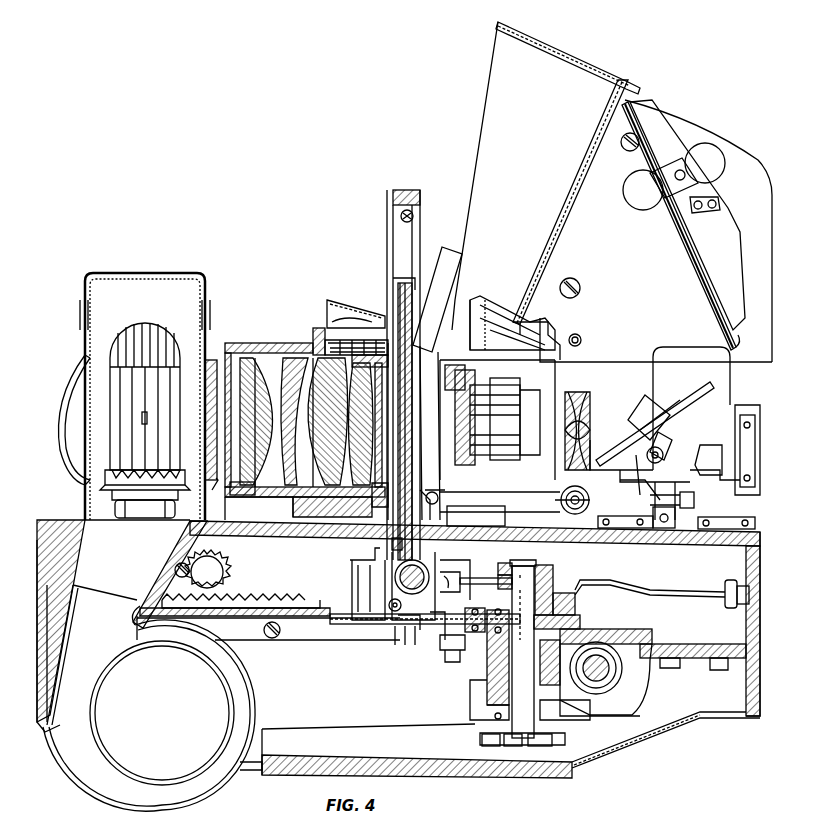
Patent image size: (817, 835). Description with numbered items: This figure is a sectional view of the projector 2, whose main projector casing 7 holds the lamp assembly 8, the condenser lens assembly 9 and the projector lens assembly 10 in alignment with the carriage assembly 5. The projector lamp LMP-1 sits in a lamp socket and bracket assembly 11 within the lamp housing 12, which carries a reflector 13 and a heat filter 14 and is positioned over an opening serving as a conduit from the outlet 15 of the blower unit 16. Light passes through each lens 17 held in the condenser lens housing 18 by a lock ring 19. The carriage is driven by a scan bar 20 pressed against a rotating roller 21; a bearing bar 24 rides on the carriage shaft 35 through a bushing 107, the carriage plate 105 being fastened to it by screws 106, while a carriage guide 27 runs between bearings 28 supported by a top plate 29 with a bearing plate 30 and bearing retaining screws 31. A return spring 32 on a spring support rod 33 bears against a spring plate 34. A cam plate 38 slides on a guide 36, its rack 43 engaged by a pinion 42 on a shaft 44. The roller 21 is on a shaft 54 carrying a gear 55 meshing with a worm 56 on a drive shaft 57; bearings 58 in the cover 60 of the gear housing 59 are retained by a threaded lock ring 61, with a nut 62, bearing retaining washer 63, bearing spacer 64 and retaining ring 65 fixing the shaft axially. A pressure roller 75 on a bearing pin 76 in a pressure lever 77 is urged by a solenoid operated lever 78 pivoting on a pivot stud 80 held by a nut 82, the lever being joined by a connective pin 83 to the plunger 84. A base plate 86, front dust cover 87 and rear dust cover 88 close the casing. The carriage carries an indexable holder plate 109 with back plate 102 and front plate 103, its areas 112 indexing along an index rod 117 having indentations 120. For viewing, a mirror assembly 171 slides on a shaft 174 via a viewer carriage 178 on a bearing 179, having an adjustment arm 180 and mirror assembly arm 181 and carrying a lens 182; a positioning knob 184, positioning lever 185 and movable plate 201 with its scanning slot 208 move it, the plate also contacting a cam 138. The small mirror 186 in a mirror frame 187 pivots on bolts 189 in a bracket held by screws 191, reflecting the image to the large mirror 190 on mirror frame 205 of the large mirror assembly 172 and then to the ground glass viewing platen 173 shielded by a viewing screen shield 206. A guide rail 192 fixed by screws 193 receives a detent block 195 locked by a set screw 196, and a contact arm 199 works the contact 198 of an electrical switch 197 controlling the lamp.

The projector 2 is at (34, 529).
The carriage assembly 5 is at (386, 290).
The main projector casing 7 is at (36, 571).
The lamp assembly 8 is at (77, 295).
The condenser lens assembly 9 is at (247, 513).
The projector lens assembly 10 is at (553, 376).
The lamp socket and bracket assembly 11 is at (176, 484).
The lamp housing 12 is at (140, 276).
The reflector 13 is at (64, 393).
The heat filter 14 is at (211, 358).
The outlet 15 is at (70, 600).
The blower unit 16 is at (240, 670).
The lens 17 is at (286, 370).
The condenser lens housing 18 is at (252, 345).
The lock ring 19 is at (227, 490).
The scan bar 20 is at (425, 607).
The roller 21 is at (575, 604).
The bearing bar 24 is at (447, 560).
The carriage guide 27 is at (361, 424).
The bearings 28 is at (299, 420).
The top plate 29 is at (311, 333).
The bearing plate 30 is at (308, 330).
The bearing retaining screws 31 is at (356, 315).
The return spring 32 is at (395, 636).
The spring support rod 33 is at (405, 640).
The spring plate 34 is at (416, 636).
The carriage shaft 35 is at (418, 560).
The guide 36 is at (298, 644).
The cam plate 38 is at (330, 610).
The pinion 42 is at (205, 560).
The rack 43 is at (216, 604).
The shaft 44 is at (190, 570).
The shaft 54 is at (536, 560).
The gear 55 is at (568, 722).
The worm 56 is at (606, 658).
The drive shaft 57 is at (568, 685).
The bearings 58 is at (578, 628).
The gear housing 59 is at (642, 685).
The cover 60 is at (612, 628).
The threaded lock ring 61 is at (492, 747).
The nut 62 is at (541, 747).
The bearing retaining washer 63 is at (515, 747).
The bearing spacer 64 is at (535, 630).
The retaining ring 65 is at (524, 610).
The pressure roller 75 is at (409, 607).
The bearing pin 76 is at (500, 562).
The pressure lever 77 is at (498, 574).
The solenoid operated lever 78 is at (604, 584).
The pivot stud 80 is at (477, 624).
The nut 82 is at (436, 665).
The connective pin 83 is at (724, 590).
The plunger 84 is at (726, 602).
The base plate 86 is at (512, 776).
The front dust cover 87 is at (664, 728).
The rear dust cover 88 is at (245, 778).
The back plate 102 is at (470, 412).
The front plate 103 is at (470, 432).
The carriage plate 105 is at (372, 552).
The screws 106 is at (368, 580).
The bushing 107 is at (447, 575).
The indexable holder plate 109 is at (405, 247).
The areas 112 is at (406, 190).
The index rod 117 is at (400, 216).
The indentations 120 is at (340, 500).
The cam 138 is at (406, 525).
The mirror assembly 171 is at (663, 389).
The large mirror assembly 172 is at (748, 217).
The ground glass viewing platen 173 is at (590, 140).
The shaft 174 is at (562, 494).
The viewer carriage 178 is at (562, 508).
The bearing 179 is at (555, 514).
The adjustment arm 180 is at (456, 508).
The mirror assembly arm 181 is at (636, 517).
The lens 182 is at (588, 398).
The positioning knob 184 is at (456, 252).
The positioning lever 185 is at (470, 308).
The small mirror 186 is at (698, 386).
The mirror frame 187 is at (680, 418).
The bolts 189 is at (622, 417).
The large mirror 190 is at (680, 240).
The screws 191 is at (648, 474).
The guide rail 192 is at (714, 490).
The screws 193 is at (712, 518).
The detent block 195 is at (655, 500).
The set screw 196 is at (694, 502).
The electrical switch 197 is at (745, 404).
The contact 198 is at (698, 454).
The contact arm 199 is at (718, 488).
The movable plate 201 is at (460, 462).
The mirror frame 205 is at (752, 244).
The viewing screen shield 206 is at (555, 48).
The scanning slot 208 is at (446, 385).
The projector lamp LMP-1 is at (147, 324).